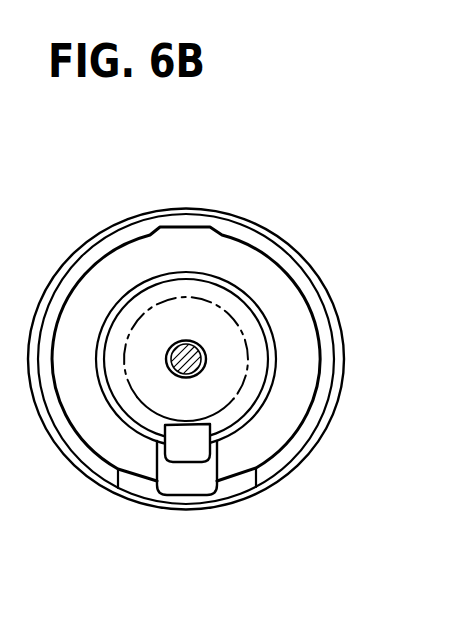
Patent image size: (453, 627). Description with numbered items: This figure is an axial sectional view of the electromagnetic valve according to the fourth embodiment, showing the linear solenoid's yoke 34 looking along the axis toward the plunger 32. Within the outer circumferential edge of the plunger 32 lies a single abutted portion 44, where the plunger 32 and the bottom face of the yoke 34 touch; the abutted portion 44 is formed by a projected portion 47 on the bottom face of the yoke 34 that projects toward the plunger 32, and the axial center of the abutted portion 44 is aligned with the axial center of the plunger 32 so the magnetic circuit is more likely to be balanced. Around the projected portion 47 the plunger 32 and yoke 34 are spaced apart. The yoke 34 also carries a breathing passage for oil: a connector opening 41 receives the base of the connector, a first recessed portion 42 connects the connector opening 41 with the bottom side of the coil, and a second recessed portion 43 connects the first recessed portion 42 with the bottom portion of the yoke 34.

The plunger 32 is at (248, 350).
The yoke 34 is at (313, 270).
The connector opening 41 is at (162, 498).
The first recessed portion 42 is at (192, 483).
The second recessed portion 43 is at (198, 445).
The abutted portion 44 is at (182, 340).
The projected portion 47 is at (196, 341).